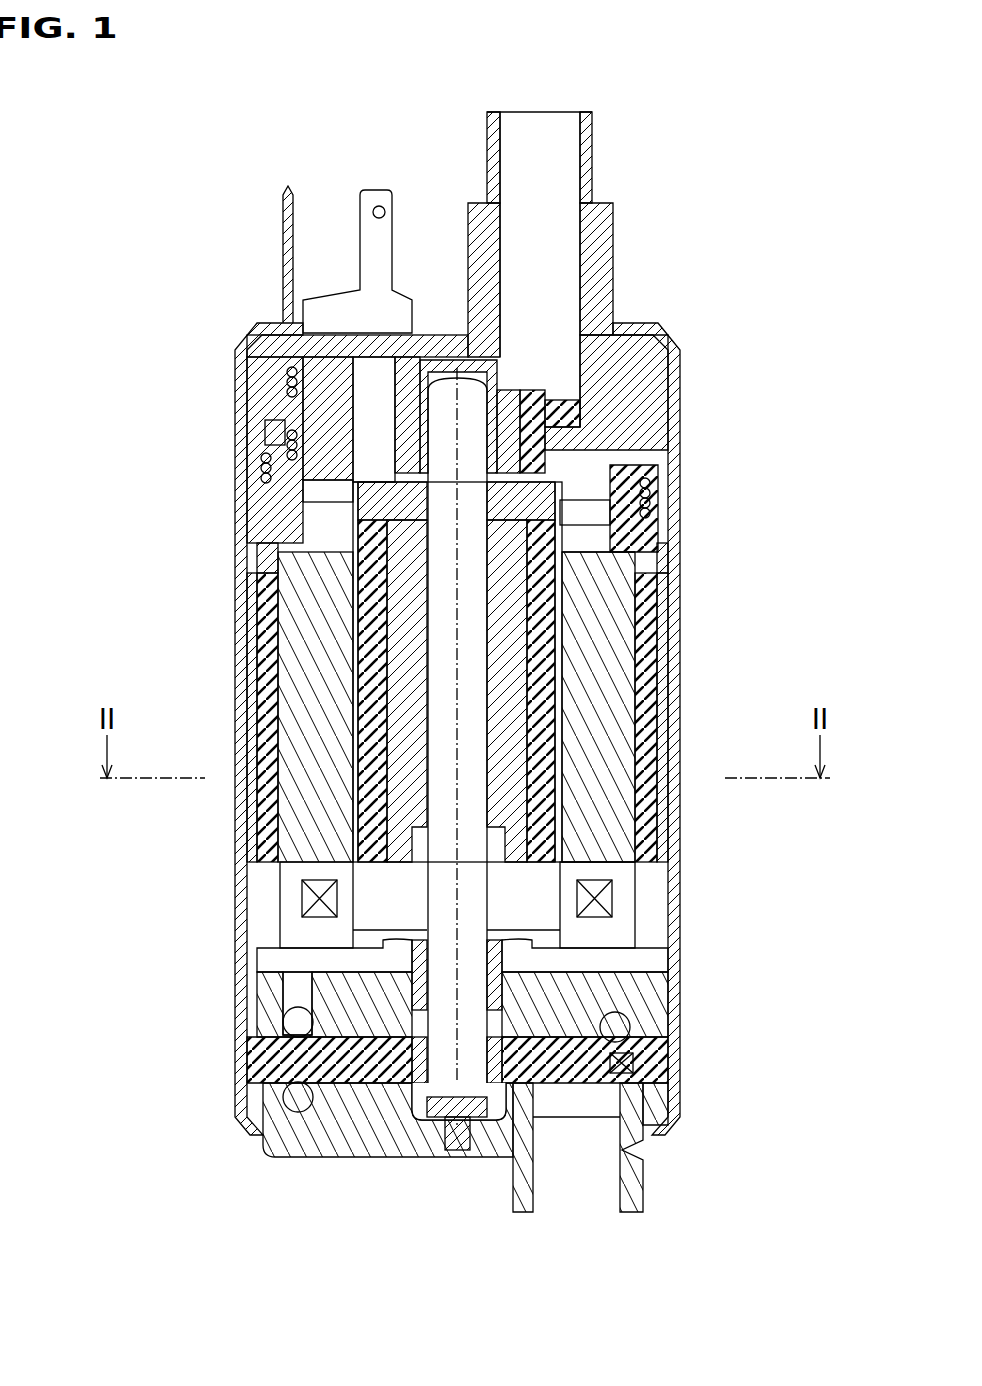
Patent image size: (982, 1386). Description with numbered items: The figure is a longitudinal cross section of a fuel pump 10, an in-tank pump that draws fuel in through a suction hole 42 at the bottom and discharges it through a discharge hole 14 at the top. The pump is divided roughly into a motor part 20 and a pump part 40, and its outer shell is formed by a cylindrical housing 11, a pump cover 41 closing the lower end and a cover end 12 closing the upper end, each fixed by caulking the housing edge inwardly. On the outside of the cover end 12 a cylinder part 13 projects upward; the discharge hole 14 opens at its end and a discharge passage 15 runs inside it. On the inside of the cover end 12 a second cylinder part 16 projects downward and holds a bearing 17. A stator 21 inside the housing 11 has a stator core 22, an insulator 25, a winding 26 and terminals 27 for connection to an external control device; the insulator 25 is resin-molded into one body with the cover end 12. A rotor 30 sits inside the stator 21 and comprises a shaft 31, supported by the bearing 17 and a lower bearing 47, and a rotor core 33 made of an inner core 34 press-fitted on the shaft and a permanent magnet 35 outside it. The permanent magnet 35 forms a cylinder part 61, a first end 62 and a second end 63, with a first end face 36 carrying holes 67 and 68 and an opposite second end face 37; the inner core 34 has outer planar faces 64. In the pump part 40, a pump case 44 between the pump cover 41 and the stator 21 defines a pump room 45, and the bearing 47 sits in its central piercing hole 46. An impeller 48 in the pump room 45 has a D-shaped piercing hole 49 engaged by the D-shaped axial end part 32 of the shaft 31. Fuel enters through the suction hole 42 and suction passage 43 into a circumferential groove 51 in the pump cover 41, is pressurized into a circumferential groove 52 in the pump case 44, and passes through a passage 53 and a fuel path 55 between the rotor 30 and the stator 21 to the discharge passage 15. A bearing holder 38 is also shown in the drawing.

The fuel pump 10 is at (216, 99).
The housing 11 is at (240, 855).
The cover end 12 is at (258, 340).
The cylinder part 13 is at (600, 218).
The discharge hole 14 is at (555, 110).
The discharge passage 15 is at (555, 285).
The cylinder part 16 is at (615, 393).
The bearing 17 is at (590, 445).
The motor part 20 is at (185, 590).
The stator 21 is at (262, 660).
The stator core 22 is at (305, 610).
The insulator 25 is at (268, 540).
The winding 26 is at (305, 895).
The terminal 27 is at (287, 195).
The rotor 30 is at (358, 720).
The shaft 31 is at (445, 795).
The axial end part 32 is at (447, 1130).
The rotor core 33 is at (558, 620).
The inner core 34 is at (530, 745).
The permanent magnet 35 is at (640, 710).
The first end face 36 is at (265, 430).
The second end face 37 is at (613, 940).
The bearing cup 38 is at (437, 385).
The pump part 40 is at (215, 1135).
The pump cover 41 is at (340, 1145).
The suction hole 42 is at (577, 1212).
The suction passage 43 is at (612, 1127).
The pump case 44 is at (365, 1060).
The pump room 45 is at (300, 1060).
The piercing hole 46 is at (380, 962).
The bearing 47 is at (660, 1015).
The impeller 48 is at (655, 1062).
The piercing hole 49 is at (470, 1100).
The circumferential groove 51 is at (297, 1095).
The circumferential groove 52 is at (285, 1030).
The passage 53 is at (300, 1010).
The fuel path 55 is at (605, 645).
The cylinder part 61 is at (585, 800).
The first end 62 is at (650, 520).
The second end 63 is at (588, 845).
The outer planar face 64 is at (420, 1065).
The hole 67 is at (275, 470).
The hole 68 is at (632, 478).